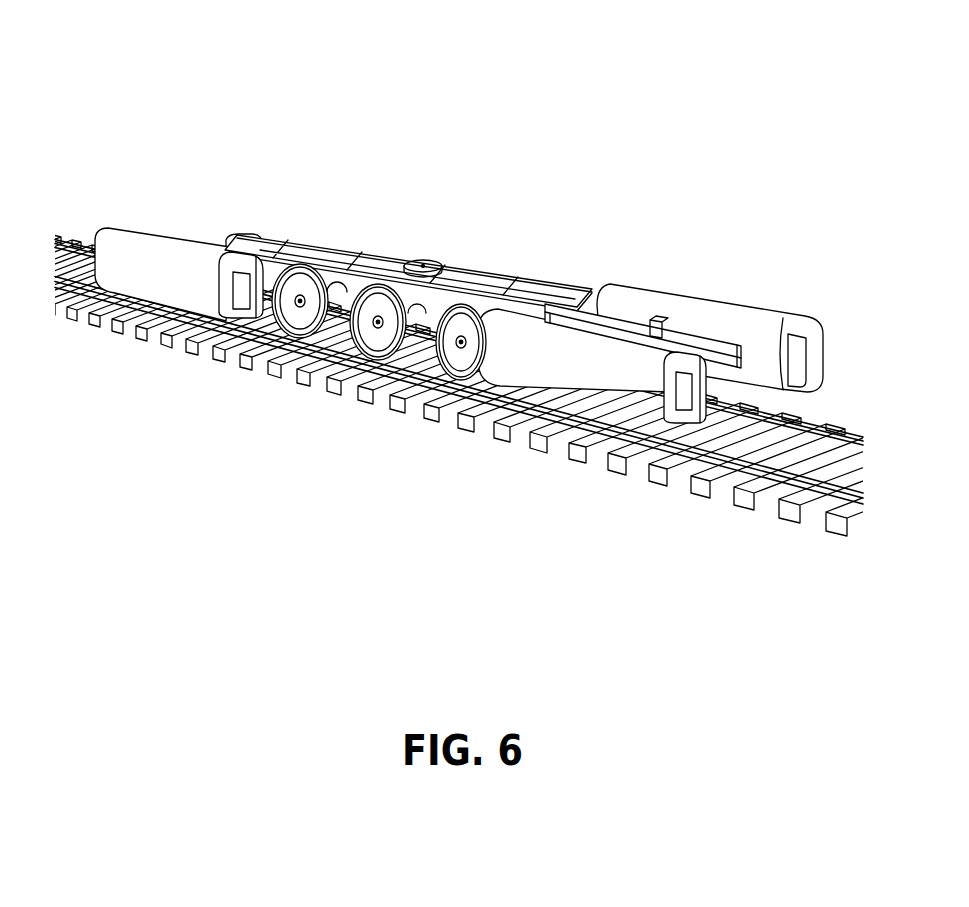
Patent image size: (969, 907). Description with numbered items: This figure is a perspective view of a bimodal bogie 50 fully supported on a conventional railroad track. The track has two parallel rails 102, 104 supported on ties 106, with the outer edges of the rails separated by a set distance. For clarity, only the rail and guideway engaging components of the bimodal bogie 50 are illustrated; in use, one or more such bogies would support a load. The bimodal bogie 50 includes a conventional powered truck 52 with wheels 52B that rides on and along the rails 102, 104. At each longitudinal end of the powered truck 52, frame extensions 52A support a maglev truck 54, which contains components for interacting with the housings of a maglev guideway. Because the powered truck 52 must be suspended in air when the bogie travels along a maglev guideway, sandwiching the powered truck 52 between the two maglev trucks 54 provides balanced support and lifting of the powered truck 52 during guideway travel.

The bimodal bogie 50 is at (461, 264).
The powered truck 52 is at (418, 326).
The frame extensions 52A is at (238, 243).
The wheels 52B is at (393, 366).
The maglev truck 54 is at (148, 88).
The rail 102 is at (781, 476).
The rail 104 is at (833, 434).
The ties 106 is at (650, 469).